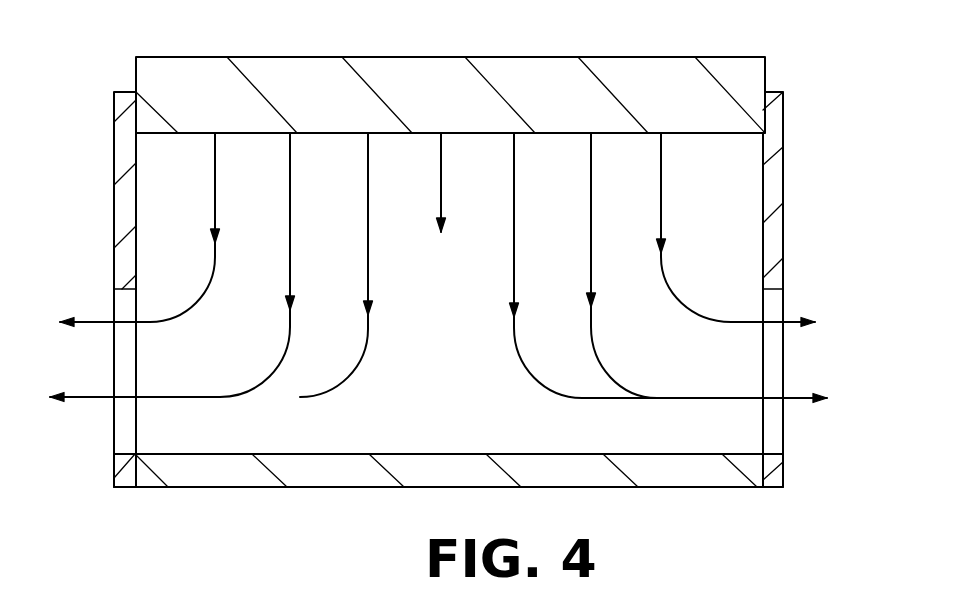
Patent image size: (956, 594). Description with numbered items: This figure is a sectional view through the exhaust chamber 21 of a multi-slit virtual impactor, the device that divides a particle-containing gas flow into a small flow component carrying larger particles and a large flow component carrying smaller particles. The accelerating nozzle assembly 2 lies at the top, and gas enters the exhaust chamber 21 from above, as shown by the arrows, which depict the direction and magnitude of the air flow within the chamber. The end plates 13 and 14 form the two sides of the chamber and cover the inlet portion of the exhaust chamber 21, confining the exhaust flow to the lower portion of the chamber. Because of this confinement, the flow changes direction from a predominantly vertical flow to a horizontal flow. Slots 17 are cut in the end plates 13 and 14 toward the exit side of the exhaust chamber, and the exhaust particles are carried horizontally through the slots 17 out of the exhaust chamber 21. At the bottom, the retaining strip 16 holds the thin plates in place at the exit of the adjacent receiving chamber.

The accelerating nozzle assembly 2 is at (450, 281).
The end plate 13 is at (114, 224).
The end plate 14 is at (783, 243).
The retaining strip 16 is at (253, 490).
The slot 17 is at (125, 365).
The exhaust chamber 21 is at (462, 292).